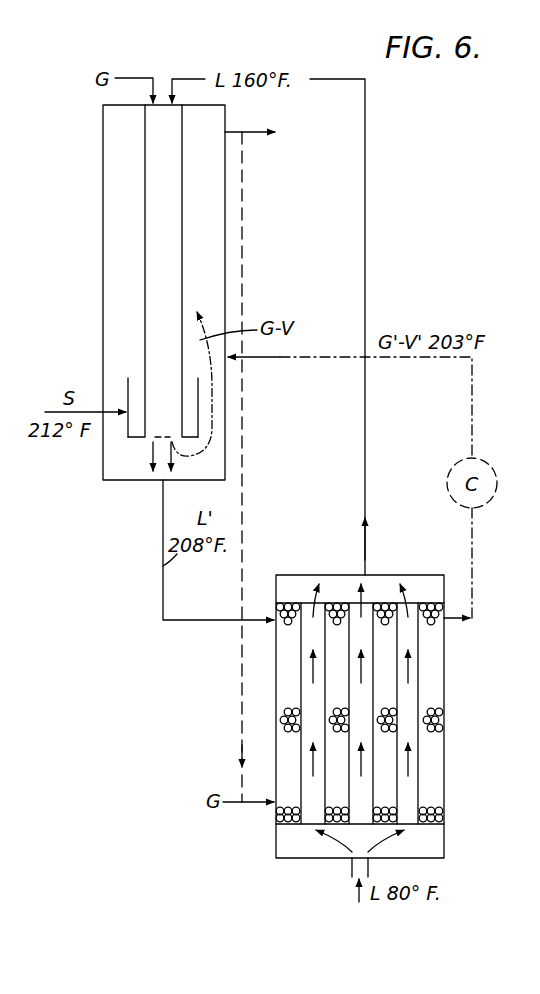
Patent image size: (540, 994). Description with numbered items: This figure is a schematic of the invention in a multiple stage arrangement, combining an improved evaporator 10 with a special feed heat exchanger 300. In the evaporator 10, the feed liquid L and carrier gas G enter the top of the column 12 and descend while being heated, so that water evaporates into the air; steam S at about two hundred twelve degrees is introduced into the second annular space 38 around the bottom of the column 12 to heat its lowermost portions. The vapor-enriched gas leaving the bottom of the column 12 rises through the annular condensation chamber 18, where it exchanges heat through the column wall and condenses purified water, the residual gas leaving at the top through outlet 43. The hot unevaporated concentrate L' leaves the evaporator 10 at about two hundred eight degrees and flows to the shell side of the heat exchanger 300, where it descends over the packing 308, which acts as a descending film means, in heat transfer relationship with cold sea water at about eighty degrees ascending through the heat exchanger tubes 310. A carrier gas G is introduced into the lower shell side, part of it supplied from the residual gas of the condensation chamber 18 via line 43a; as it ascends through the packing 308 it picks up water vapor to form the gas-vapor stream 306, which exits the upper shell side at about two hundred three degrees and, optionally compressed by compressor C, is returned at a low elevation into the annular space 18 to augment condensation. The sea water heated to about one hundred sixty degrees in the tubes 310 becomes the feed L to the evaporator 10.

The improved evaporator 10 is at (103, 175).
The column 12 is at (155, 237).
The annular condensation chamber 18 is at (234, 368).
The second annular space 38 is at (137, 397).
The outlet line 43 is at (236, 132).
The line 43a is at (243, 272).
The heat exchanger 300 is at (445, 693).
The gas-vapor stream 306 is at (473, 597).
The packing 308 is at (443, 733).
The heat exchanger tubes 310 is at (418, 677).